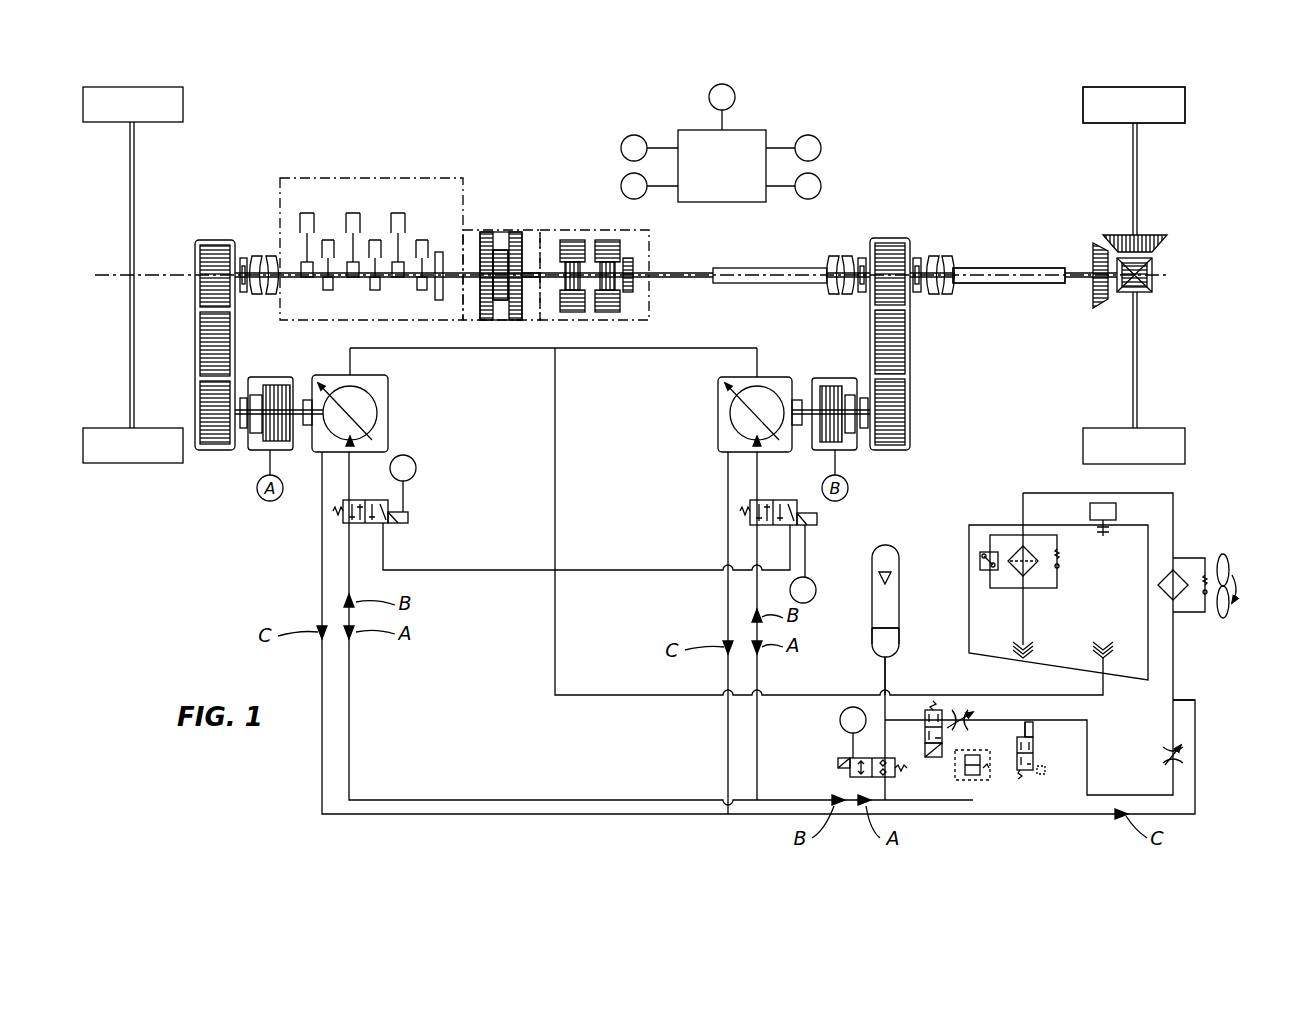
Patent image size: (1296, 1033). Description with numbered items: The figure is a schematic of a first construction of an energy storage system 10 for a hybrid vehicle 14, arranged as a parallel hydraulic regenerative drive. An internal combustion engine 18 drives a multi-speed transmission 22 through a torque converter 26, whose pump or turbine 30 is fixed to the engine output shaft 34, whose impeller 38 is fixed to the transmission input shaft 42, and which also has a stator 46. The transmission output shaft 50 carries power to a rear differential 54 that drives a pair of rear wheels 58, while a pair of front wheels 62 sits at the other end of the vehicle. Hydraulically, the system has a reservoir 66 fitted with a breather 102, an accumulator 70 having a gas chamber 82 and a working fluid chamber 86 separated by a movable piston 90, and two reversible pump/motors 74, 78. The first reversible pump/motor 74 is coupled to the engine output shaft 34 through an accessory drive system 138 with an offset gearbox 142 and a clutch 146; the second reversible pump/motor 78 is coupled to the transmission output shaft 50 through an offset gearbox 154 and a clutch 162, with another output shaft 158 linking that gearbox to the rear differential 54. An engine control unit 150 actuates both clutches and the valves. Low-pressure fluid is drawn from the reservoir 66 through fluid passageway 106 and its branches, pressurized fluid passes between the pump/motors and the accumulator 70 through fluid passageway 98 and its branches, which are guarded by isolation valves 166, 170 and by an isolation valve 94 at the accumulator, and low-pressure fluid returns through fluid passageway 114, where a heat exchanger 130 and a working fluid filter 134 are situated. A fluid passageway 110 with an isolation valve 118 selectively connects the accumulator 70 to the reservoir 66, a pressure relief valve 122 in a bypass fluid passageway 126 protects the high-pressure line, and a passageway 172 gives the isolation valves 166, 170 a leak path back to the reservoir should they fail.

The energy storage system 10 is at (1102, 845).
The hybrid vehicle 14 is at (1218, 142).
The internal combustion engine 18 is at (369, 160).
The multi-speed transmission 22 is at (597, 226).
The torque converter 26 is at (502, 226).
The pump or turbine 30 is at (483, 234).
The output shaft 34 is at (452, 266).
The impeller 38 is at (523, 248).
The input shaft 42 is at (527, 320).
The stator 46 is at (497, 305).
The output shaft 50 is at (788, 285).
The rear differential 54 is at (1162, 305).
The rear wheels 58 is at (1095, 108).
The front wheels 62 is at (164, 115).
The reservoir 66 is at (968, 590).
The accumulator 70 is at (897, 548).
The first reversible pump/motor 74 is at (388, 418).
The second reversible pump/motor 78 is at (718, 418).
The first chamber 82 is at (880, 596).
The second chamber 86 is at (888, 640).
The movable piston 90 is at (884, 627).
The isolation valve 94 is at (898, 778).
The fluid passageway 98 is at (858, 725).
The breather 102 is at (1094, 504).
The fluid passageway 106 is at (834, 521).
The fluid passageway 110 is at (990, 722).
The fluid passageway 114 is at (1081, 644).
The isolation valve 118 is at (924, 735).
The pressure relief valve 122 is at (1018, 792).
The fluid passageway 126 is at (1012, 700).
The heat exchanger 130 is at (1205, 628).
The working fluid filter 134 is at (1070, 562).
The accessory drive system 138 is at (217, 226).
The offset gearbox 142 is at (195, 315).
The clutch 146 is at (270, 378).
The engine control unit 150 is at (728, 200).
The offset gearbox 154 is at (912, 380).
The output shaft 158 is at (1038, 270).
The clutch 162 is at (833, 378).
The isolation valve 166 is at (358, 498).
The isolation valve 170 is at (757, 497).
The passageway 172 is at (598, 570).